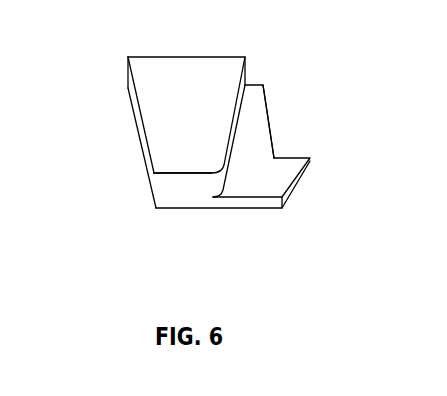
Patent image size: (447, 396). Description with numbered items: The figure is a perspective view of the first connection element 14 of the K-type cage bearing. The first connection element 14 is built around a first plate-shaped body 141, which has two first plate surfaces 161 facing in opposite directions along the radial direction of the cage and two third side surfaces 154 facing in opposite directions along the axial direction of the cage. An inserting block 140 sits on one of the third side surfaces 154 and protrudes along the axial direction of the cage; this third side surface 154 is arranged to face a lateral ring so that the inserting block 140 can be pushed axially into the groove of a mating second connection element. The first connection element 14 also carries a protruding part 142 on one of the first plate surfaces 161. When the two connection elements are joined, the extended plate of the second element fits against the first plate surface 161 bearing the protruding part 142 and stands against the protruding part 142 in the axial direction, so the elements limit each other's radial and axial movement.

The first connection element 14 is at (189, 163).
The inserting block 140 is at (292, 162).
The first plate-shaped body 141 is at (162, 200).
The protruding part 142 is at (163, 181).
The third side surfaces 154 is at (122, 119).
The first plate surfaces 161 is at (263, 86).